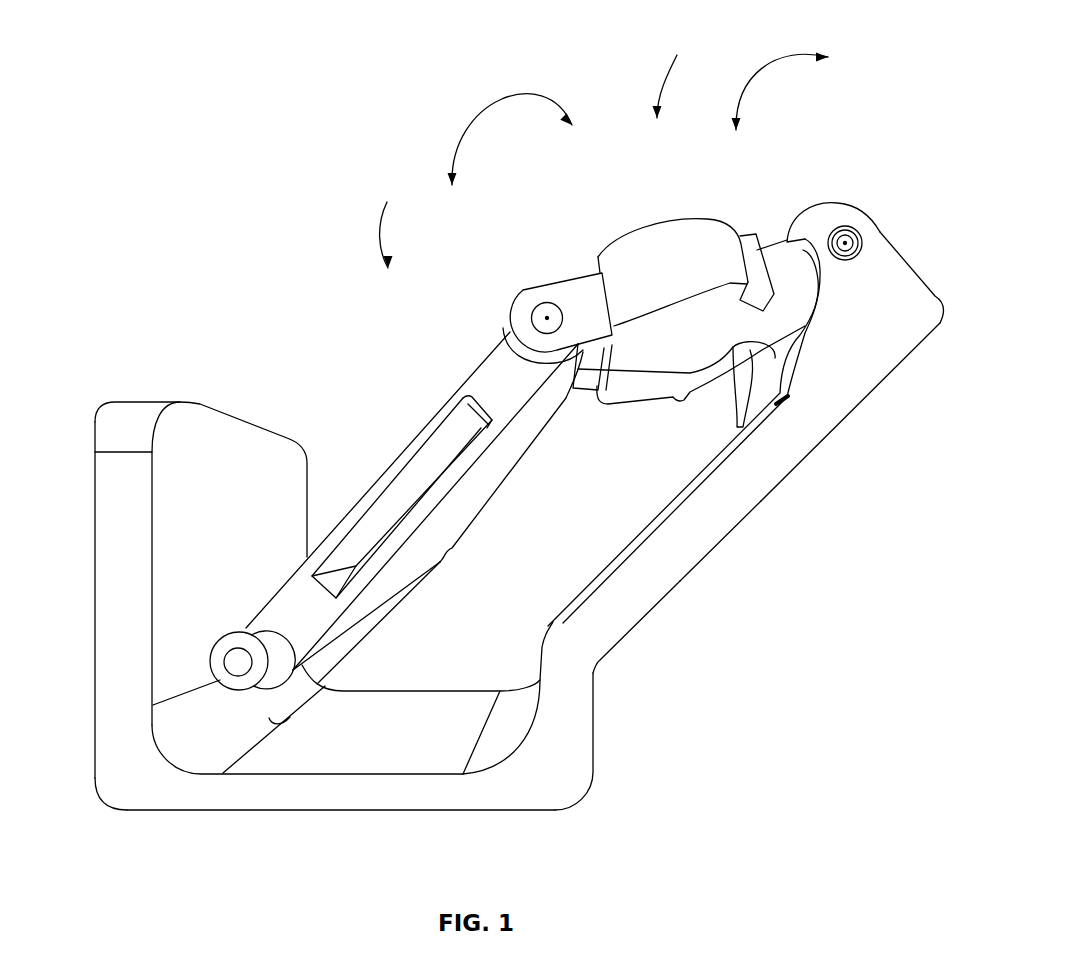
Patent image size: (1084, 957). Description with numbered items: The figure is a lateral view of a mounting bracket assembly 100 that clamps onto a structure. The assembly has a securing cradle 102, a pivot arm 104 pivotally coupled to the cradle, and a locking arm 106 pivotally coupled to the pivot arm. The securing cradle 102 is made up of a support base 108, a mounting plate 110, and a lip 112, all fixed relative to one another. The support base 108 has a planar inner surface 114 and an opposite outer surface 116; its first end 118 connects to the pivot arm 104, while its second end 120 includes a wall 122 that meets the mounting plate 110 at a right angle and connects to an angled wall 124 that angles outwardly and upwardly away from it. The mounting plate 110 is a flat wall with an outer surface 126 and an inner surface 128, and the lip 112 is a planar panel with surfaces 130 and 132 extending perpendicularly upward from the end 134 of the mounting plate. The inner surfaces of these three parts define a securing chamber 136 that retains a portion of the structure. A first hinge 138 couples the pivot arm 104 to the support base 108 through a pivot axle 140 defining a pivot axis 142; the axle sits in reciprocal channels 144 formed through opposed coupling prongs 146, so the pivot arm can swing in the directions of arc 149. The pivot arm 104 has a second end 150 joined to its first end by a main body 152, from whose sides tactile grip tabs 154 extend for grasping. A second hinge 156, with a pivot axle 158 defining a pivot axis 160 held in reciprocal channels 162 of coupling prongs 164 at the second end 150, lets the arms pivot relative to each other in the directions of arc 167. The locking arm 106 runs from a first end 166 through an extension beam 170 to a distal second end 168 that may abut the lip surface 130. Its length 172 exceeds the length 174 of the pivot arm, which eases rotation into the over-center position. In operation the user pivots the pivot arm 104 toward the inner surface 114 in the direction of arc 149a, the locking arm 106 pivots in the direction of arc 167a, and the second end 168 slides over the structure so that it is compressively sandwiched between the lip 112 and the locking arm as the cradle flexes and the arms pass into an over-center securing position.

The mounting bracket assembly 100 is at (212, 256).
The securing cradle 102 is at (820, 452).
The pivot arm 104 is at (685, 222).
The locking arm 106 is at (470, 370).
The support base 108 is at (718, 548).
The mounting plate 110 is at (353, 811).
The lip 112 is at (95, 658).
The inner surface 114 is at (613, 563).
The outer surface 116 is at (772, 493).
The first end 118 is at (931, 270).
The second end 120 is at (595, 745).
The wall 122 is at (595, 693).
The angled wall 124 is at (643, 618).
The outer surface 126 is at (442, 811).
The inner surface 128 is at (435, 707).
The outer surface 130 is at (198, 472).
The inner surface 132 is at (95, 556).
The end 134 is at (143, 792).
The securing chamber 136 is at (488, 487).
The first hinge 138 is at (868, 218).
The pivot axle 140 is at (862, 248).
The pivot axis 142 is at (842, 228).
The reciprocal channels 144 is at (843, 265).
The coupling prongs 146 is at (820, 220).
The arc 149 is at (767, 63).
The arc 149a is at (658, 82).
The second end 150 is at (547, 316).
The main body 152 is at (598, 257).
The tactile grip tabs 154 is at (713, 237).
The second hinge 156 is at (517, 292).
The pivot axle 158 is at (513, 312).
The pivot axis 160 is at (528, 282).
The reciprocal channels 162 is at (550, 304).
The coupling prongs 164 is at (585, 386).
The first end 166 is at (508, 342).
The arc 167 is at (492, 97).
The arc 167a is at (377, 230).
The distal second end 168 is at (241, 632).
The extension beam 170 is at (367, 502).
The length 172 is at (441, 553).
The length 174 is at (683, 399).